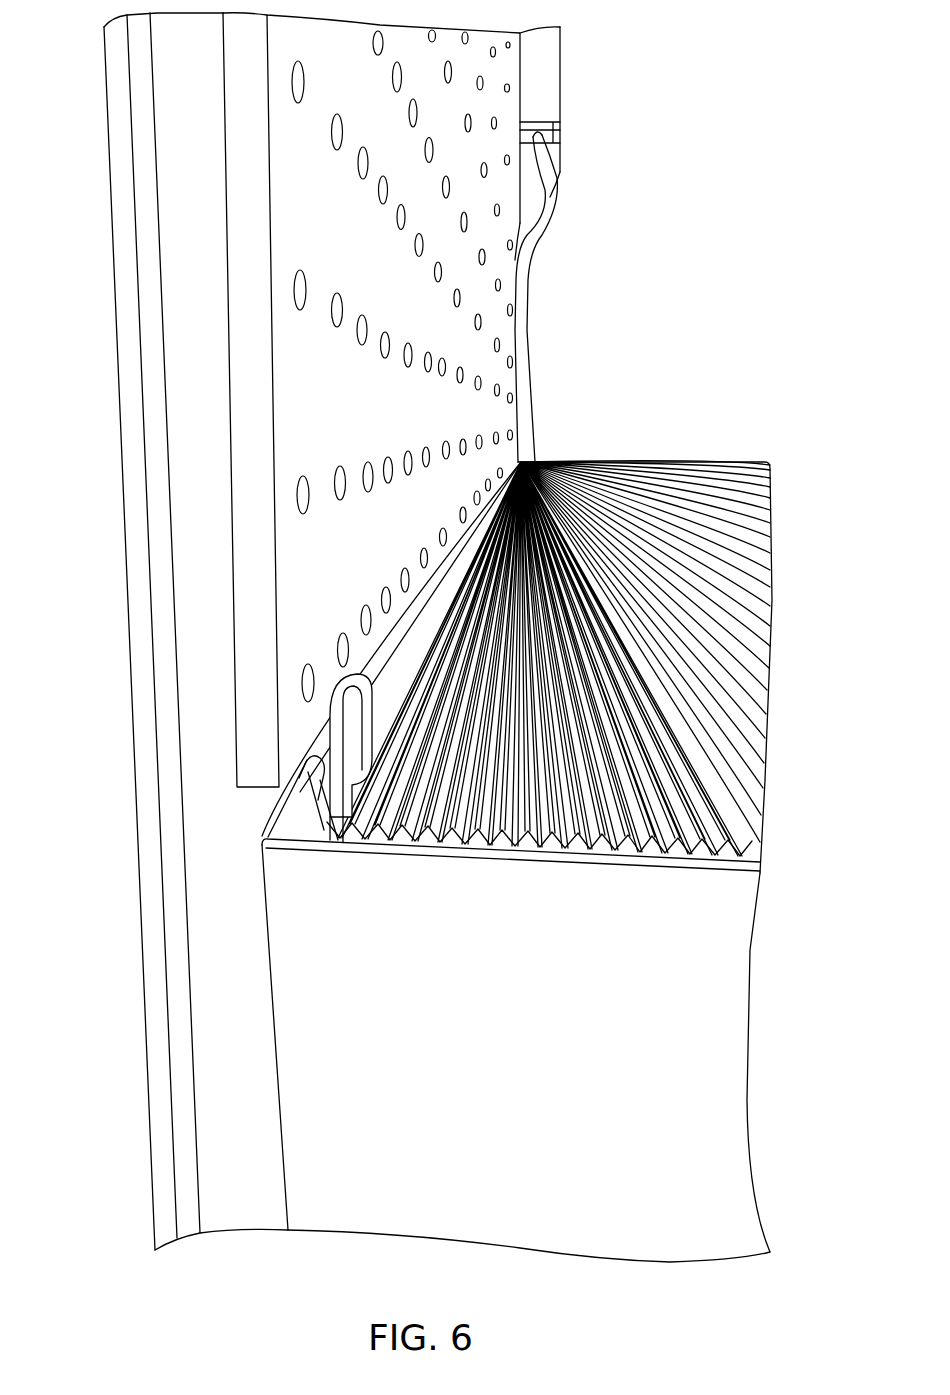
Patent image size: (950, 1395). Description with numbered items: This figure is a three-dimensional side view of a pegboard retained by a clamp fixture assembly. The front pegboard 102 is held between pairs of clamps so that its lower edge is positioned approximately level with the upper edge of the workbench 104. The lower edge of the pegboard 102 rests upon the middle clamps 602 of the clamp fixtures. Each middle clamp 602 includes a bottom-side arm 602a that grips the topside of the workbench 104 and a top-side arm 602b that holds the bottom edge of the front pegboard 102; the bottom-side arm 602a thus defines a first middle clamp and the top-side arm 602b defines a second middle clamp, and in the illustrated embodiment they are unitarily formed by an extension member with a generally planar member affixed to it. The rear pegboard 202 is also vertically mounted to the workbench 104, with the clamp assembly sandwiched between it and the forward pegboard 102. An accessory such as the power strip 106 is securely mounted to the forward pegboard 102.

The pegboard 102 is at (493, 350).
The workbench 104 is at (710, 985).
The power strip 106 is at (560, 92).
The rear pegboard 202 is at (176, 620).
The middle clamp 602 is at (300, 777).
The bottom-side arm 602a is at (312, 802).
The top-side arm 602b is at (363, 717).